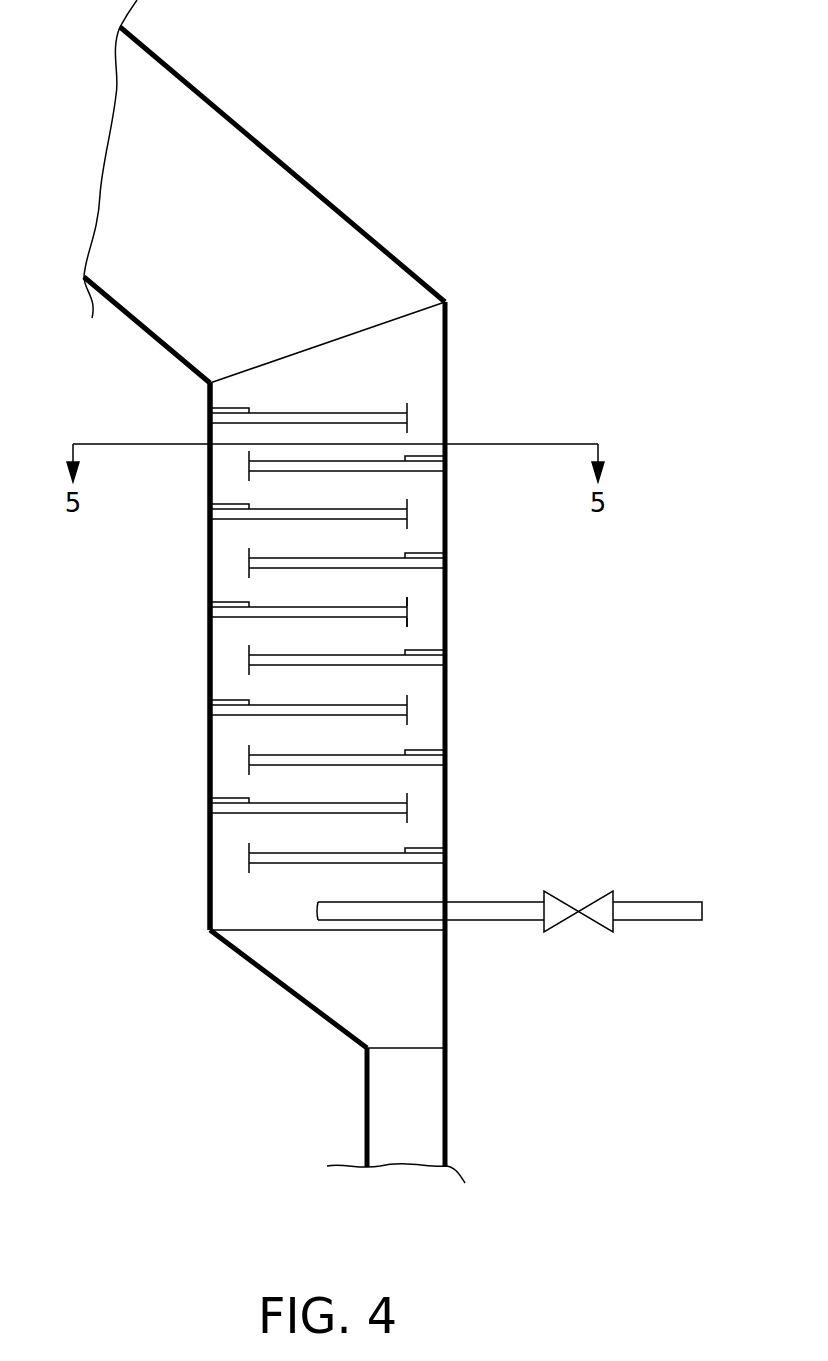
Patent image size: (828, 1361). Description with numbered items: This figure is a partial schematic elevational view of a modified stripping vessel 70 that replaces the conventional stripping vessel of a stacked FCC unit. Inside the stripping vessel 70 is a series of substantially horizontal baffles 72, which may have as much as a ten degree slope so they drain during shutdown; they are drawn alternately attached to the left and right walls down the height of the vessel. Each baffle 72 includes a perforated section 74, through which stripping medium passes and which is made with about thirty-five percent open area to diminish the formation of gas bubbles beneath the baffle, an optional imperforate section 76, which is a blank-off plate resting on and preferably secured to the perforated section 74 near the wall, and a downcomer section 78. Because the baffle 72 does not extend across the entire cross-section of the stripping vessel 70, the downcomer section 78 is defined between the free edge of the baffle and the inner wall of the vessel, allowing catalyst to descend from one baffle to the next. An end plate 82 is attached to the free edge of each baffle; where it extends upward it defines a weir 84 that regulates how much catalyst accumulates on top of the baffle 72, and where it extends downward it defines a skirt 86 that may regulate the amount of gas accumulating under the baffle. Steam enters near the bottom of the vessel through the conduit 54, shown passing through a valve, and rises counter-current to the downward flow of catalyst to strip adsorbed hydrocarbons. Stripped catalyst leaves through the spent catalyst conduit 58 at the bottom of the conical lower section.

The stripping vessel 70 is at (392, 175).
The baffles 72 is at (380, 611).
The perforated section 74 is at (392, 557).
The imperforate section 76 is at (427, 551).
The downcomer section 78 is at (227, 565).
The end plate 82 is at (455, 609).
The weir 84 is at (408, 597).
The skirt 86 is at (408, 627).
The conduit 54 is at (492, 910).
The spent catalyst conduit 58 is at (432, 1111).